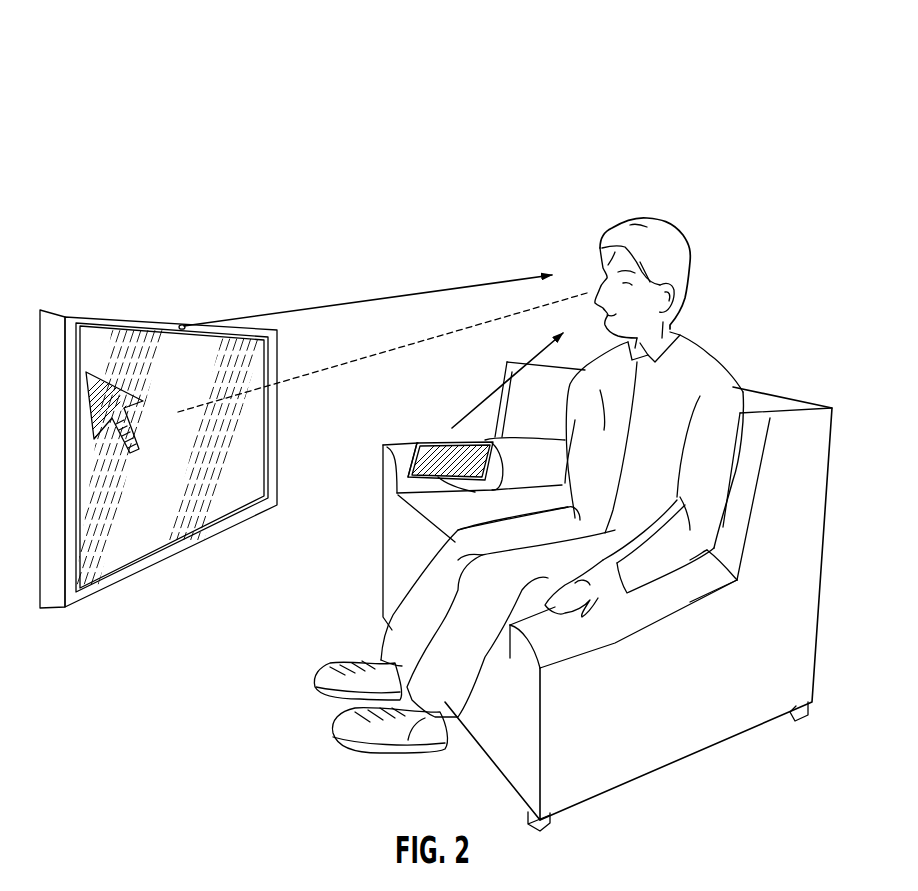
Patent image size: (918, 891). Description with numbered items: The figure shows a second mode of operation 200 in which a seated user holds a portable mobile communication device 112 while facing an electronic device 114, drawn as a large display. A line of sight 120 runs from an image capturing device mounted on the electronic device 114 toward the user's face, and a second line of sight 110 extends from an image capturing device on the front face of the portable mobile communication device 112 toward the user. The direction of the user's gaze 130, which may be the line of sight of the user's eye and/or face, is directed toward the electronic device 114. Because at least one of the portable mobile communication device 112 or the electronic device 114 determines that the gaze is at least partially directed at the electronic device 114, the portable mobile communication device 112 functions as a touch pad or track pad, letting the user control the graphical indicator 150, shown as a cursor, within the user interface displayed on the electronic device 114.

The system environment 200 is at (700, 77).
The line of sight 110 is at (467, 411).
The portable mobile communication device 112 is at (408, 474).
The electronic device 114 is at (158, 346).
The line of sight 120 is at (332, 304).
The direction of the user's gaze 130 is at (572, 292).
The graphical indicator 150 is at (101, 368).